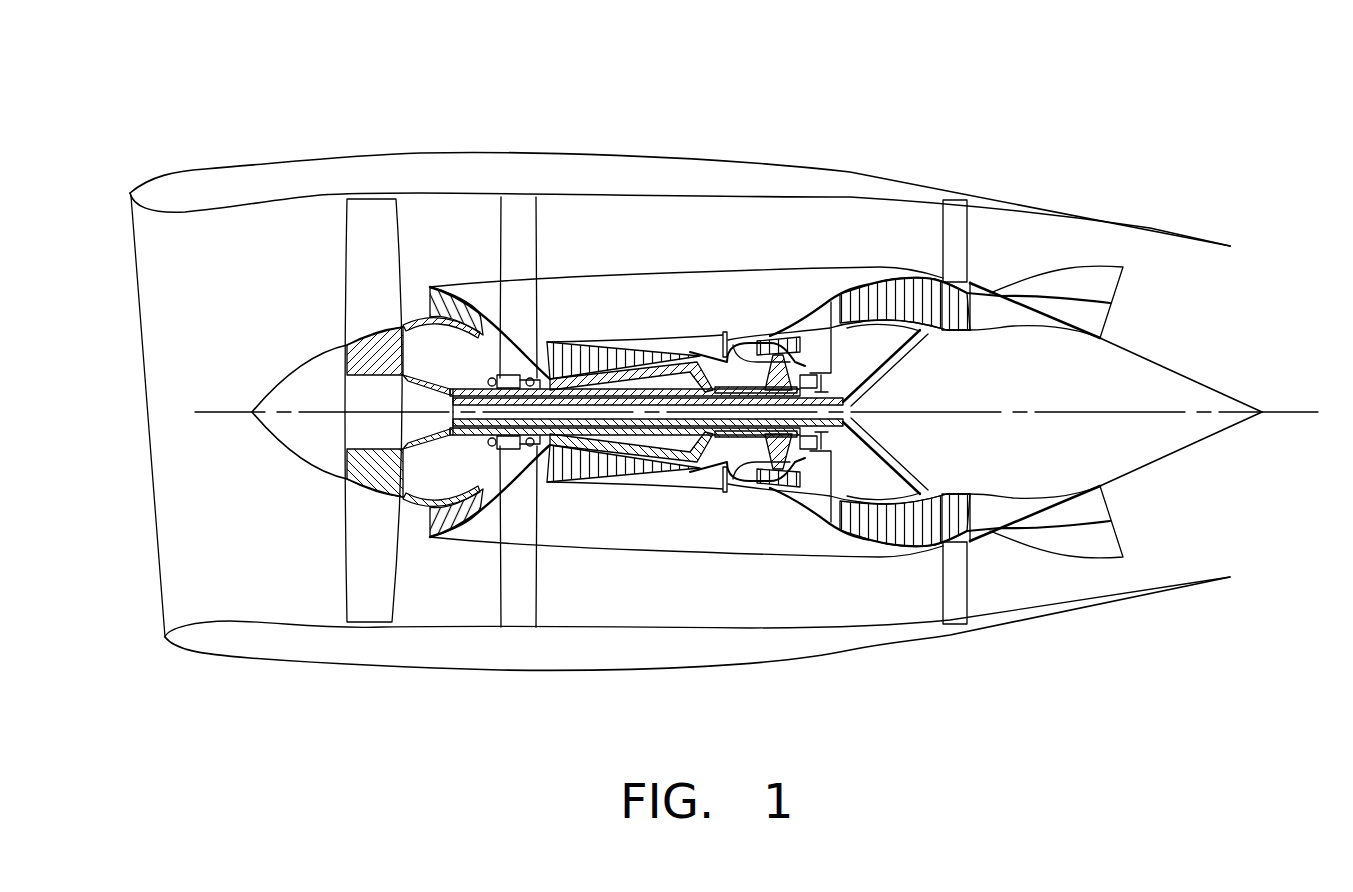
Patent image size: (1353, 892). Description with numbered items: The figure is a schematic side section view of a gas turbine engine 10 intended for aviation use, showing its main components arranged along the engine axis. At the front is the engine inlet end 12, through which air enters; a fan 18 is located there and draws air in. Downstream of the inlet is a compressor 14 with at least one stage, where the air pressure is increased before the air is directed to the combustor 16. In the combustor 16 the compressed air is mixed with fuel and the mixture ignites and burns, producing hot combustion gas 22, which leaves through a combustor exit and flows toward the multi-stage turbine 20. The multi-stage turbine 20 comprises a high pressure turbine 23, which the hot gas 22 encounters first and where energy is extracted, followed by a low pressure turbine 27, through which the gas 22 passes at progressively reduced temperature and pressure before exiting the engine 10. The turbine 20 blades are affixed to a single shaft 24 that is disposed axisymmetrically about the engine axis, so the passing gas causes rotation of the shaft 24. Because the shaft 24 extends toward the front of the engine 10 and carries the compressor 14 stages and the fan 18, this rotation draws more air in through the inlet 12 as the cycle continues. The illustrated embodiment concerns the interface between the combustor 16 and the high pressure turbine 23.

The gas turbine engine 10 is at (990, 126).
The engine inlet end 12 is at (128, 266).
The compressor 14 is at (582, 336).
The combustor 16 is at (746, 328).
The fan 18 is at (412, 192).
The multi-stage turbine 20 is at (845, 276).
The hot combustion gas 22 is at (800, 335).
The high pressure turbine 23 is at (790, 356).
The shaft 24 is at (1318, 412).
The low pressure turbine 27 is at (942, 266).